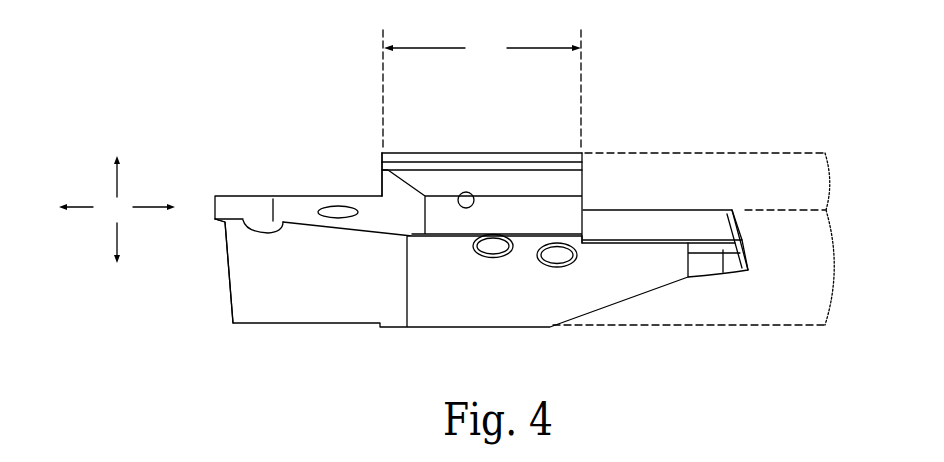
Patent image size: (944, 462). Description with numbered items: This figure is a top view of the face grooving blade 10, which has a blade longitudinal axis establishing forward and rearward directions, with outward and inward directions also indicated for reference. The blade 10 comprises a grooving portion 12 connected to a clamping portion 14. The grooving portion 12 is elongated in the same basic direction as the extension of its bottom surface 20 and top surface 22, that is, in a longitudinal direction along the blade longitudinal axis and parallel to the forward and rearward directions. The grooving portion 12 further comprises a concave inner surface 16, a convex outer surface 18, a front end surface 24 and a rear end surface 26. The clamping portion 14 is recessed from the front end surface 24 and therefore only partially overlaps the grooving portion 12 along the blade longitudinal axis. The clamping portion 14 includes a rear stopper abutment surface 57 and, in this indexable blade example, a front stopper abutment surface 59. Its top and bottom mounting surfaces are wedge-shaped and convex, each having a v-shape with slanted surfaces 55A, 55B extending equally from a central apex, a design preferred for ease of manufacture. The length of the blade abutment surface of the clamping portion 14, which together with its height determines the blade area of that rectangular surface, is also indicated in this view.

The face grooving blade 10 is at (468, 217).
The grooving portion 12 is at (715, 267).
The clamping portion 14 is at (727, 181).
The concave inner surface 16 is at (669, 255).
The convex outer surface 18 is at (673, 224).
The bottom surface 20 is at (329, 326).
The top surface 22 is at (298, 209).
The front end surface 24 is at (230, 270).
The rear end surface 26 is at (740, 214).
The slanted surface 55A is at (463, 168).
The slanted surface 55B is at (452, 152).
The rear stopper abutment surface 57 is at (498, 174).
The front stopper abutment surface 59 is at (378, 184).